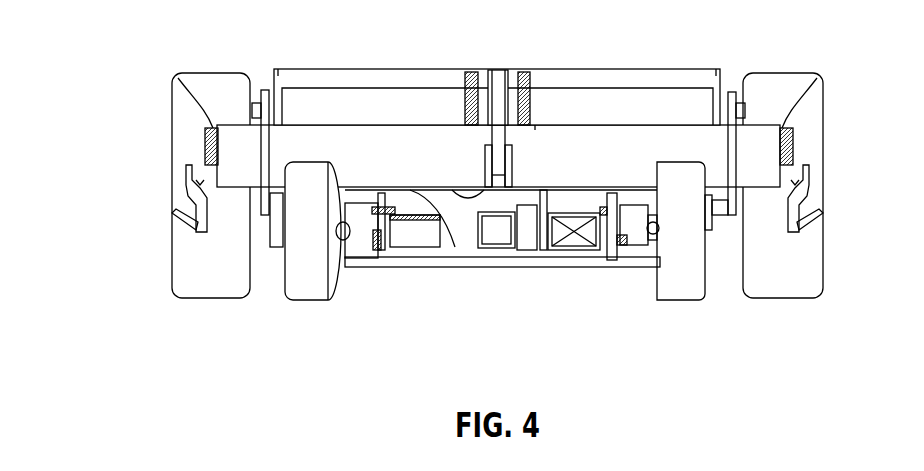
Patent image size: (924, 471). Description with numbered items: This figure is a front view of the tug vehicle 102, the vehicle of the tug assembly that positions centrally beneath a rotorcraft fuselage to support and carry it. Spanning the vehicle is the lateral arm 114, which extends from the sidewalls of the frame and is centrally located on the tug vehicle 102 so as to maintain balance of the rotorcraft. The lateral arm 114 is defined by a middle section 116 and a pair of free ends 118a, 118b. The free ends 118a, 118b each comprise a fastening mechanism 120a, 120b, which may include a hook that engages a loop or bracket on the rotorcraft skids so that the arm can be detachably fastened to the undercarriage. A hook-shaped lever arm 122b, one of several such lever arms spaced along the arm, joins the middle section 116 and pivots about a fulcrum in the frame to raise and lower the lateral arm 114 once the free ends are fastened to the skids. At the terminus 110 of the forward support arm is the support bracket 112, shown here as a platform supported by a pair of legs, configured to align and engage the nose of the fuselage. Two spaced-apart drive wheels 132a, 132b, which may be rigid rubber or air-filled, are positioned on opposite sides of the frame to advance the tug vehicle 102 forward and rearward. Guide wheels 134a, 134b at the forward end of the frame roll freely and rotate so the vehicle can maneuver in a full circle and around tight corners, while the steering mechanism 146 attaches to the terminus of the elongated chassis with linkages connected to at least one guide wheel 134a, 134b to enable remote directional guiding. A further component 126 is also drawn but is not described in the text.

The tug vehicle 102 is at (350, 68).
The terminus of the forward support arm 110 is at (522, 250).
The support bracket 112 is at (467, 235).
The lateral arm 114 is at (645, 142).
The middle section 116 is at (535, 137).
The free end 118a is at (822, 74).
The free end 118b is at (174, 74).
The fastening mechanism 120a is at (812, 233).
The fastening mechanism 120b is at (196, 231).
The lever arm 122b is at (512, 140).
The fastener 126 is at (478, 88).
The drive wheel 132a is at (808, 118).
The drive wheel 132b is at (188, 118).
The guide wheel 134a is at (693, 290).
The guide wheel 134b is at (312, 290).
The steering mechanism 146 is at (607, 255).